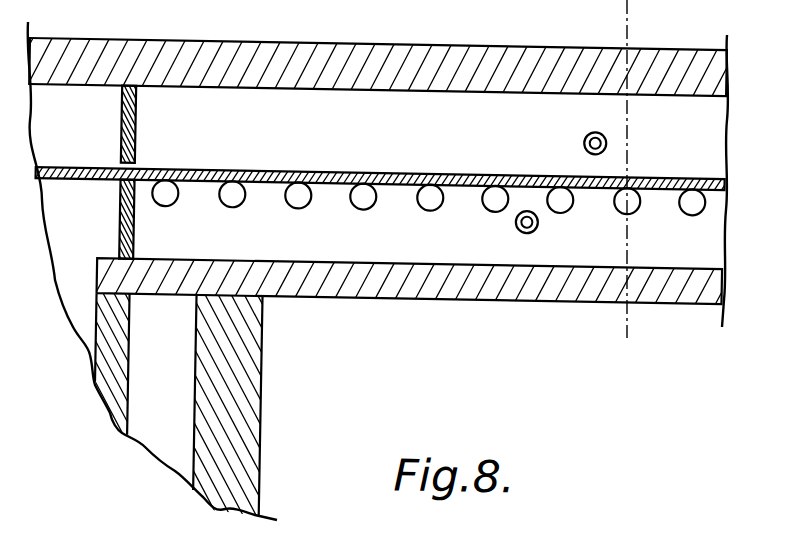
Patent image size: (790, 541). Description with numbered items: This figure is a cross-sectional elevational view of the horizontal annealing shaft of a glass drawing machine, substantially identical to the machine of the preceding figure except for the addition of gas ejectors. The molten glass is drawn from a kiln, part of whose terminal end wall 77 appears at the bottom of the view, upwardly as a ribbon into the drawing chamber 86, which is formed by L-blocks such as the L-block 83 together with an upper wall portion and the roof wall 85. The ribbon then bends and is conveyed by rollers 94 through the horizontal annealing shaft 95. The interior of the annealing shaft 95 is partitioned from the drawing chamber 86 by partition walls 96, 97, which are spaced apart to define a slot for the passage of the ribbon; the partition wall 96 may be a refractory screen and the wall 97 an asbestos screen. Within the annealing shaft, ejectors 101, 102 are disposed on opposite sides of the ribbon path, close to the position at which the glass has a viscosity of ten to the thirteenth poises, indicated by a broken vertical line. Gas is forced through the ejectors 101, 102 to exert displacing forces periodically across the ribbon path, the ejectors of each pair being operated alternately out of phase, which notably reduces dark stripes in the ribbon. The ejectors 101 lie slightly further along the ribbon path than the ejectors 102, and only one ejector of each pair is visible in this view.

The roof wall 85 is at (150, 40).
The drawing chamber 86 is at (85, 133).
The partition wall 97 is at (130, 122).
The horizontal annealing shaft 95 is at (377, 136).
The ejector 101 is at (585, 131).
The partition wall 96 is at (123, 224).
The rollers 94 is at (232, 193).
The ejector 102 is at (523, 223).
The L-block 83 is at (118, 361).
The terminal end wall 77 is at (239, 373).